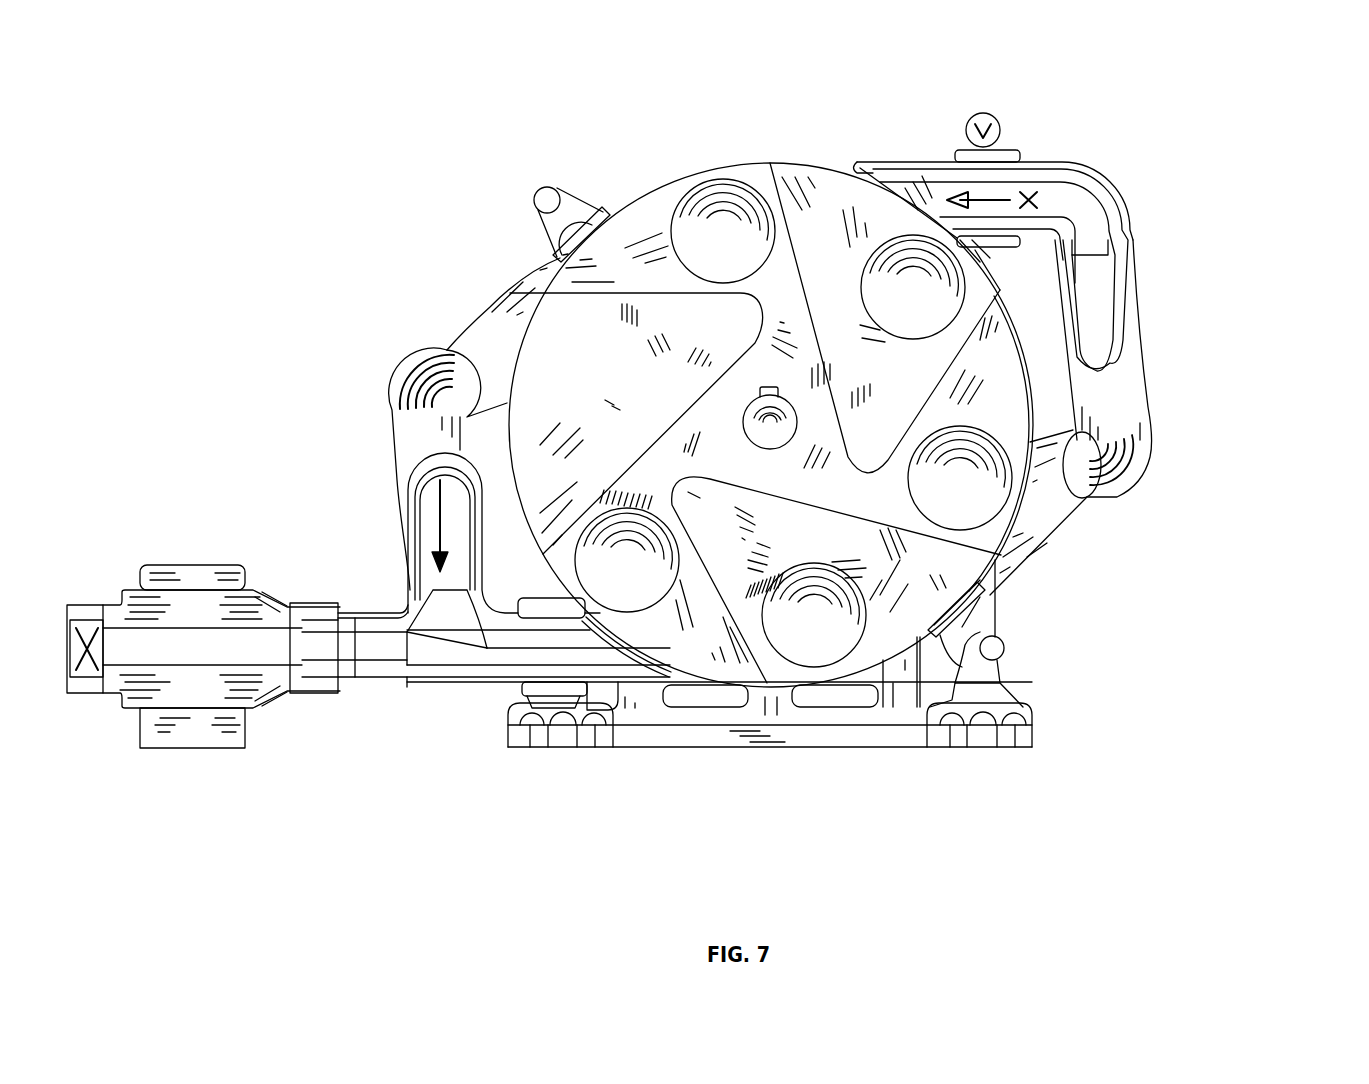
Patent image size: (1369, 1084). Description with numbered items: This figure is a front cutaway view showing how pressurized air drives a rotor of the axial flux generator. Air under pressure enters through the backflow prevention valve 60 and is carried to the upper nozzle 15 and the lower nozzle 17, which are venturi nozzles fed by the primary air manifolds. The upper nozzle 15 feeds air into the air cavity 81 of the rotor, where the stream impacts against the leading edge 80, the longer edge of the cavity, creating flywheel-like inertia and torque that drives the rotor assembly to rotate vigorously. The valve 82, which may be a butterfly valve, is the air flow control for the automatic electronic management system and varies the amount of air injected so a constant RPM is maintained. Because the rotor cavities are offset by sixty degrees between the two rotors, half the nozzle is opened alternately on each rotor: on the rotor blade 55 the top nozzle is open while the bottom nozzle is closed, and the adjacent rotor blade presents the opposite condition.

The upper nozzle 15 is at (900, 163).
The lower nozzle 17 is at (633, 680).
The rotor blade 55 is at (1017, 498).
The backflow prevention valve 60 is at (83, 697).
The leading edge 80 is at (783, 425).
The air cavity 81 is at (840, 314).
The valve 82 is at (1002, 124).